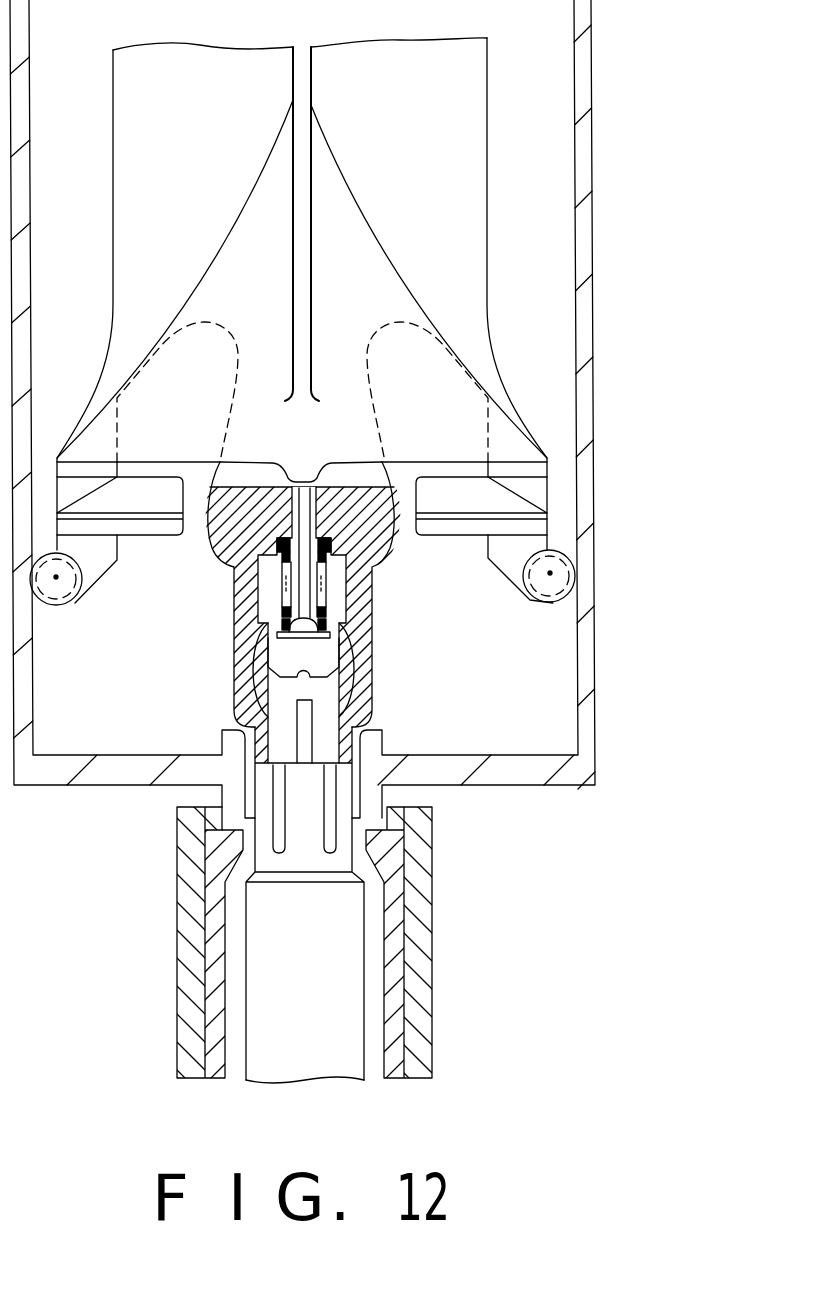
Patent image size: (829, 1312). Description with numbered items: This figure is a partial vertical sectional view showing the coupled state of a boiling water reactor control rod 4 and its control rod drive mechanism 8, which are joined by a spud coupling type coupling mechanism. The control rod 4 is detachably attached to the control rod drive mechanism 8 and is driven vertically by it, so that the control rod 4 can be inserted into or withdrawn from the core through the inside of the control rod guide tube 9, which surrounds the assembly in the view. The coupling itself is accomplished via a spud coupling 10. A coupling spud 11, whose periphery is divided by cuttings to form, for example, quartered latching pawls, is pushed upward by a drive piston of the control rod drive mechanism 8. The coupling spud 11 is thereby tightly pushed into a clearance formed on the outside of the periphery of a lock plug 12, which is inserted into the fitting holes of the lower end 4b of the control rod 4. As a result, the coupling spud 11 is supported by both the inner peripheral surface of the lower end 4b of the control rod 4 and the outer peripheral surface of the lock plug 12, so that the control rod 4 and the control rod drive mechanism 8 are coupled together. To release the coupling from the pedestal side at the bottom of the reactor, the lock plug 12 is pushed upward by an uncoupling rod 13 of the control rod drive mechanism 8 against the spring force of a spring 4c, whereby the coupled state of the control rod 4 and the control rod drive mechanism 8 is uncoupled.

The control rod 4 is at (470, 143).
The lower end of the control rod 4b is at (233, 608).
The spring 4c is at (226, 583).
The control rod drive mechanism 8 is at (432, 943).
The control rod guide tube 9 is at (592, 250).
The spud coupling 10 is at (373, 578).
The coupling spud 11 is at (258, 655).
The lock plug 12 is at (318, 656).
The uncoupling rod 13 is at (307, 717).